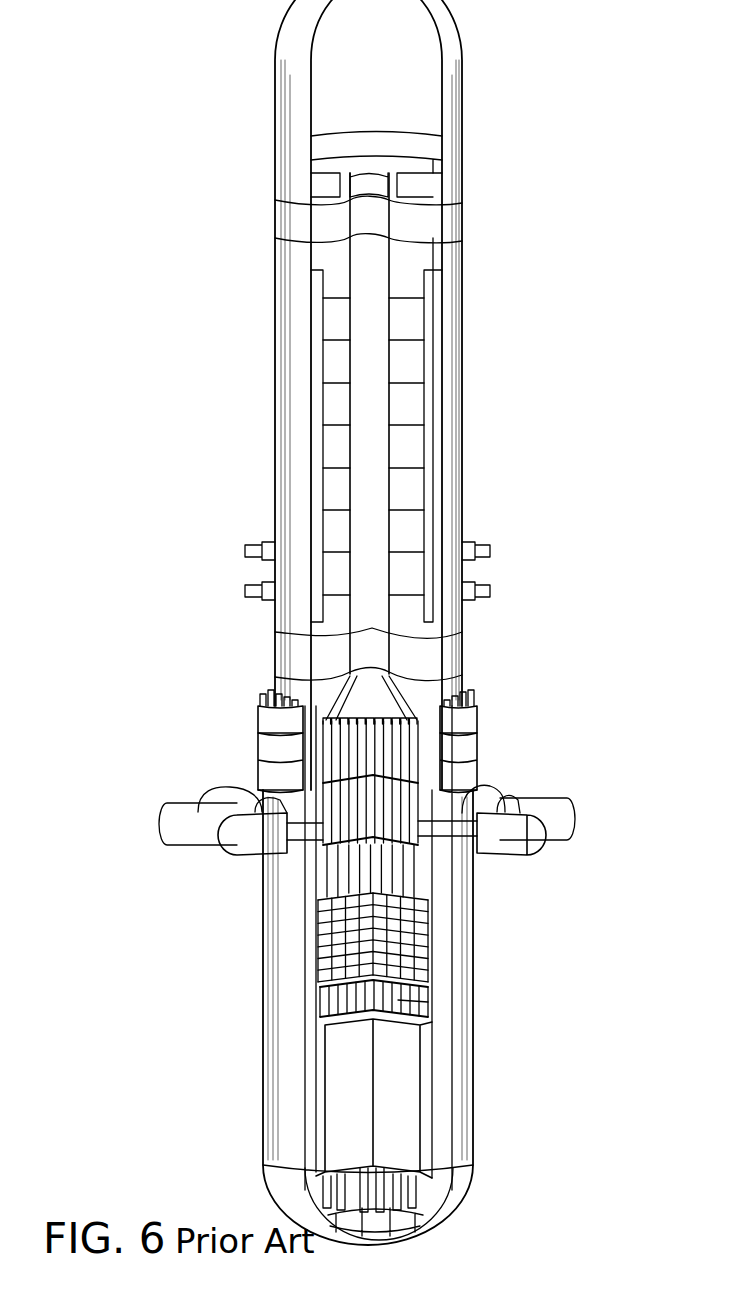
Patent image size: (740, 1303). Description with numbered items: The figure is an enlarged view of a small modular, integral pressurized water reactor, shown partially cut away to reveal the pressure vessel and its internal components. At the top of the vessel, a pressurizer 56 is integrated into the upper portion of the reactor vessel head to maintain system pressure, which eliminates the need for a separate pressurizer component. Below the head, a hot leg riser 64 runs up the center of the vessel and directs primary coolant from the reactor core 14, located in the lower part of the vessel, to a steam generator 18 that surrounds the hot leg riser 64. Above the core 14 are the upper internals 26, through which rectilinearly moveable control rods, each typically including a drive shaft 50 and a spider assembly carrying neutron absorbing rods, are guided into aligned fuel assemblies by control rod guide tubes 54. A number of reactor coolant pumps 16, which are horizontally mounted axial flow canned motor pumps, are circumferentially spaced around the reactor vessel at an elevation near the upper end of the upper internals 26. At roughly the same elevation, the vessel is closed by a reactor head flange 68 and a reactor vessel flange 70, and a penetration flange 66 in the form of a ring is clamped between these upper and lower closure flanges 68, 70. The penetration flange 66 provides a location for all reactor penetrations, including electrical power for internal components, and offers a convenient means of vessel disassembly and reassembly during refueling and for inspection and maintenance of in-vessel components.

The reactor core 14 is at (410, 1090).
The reactor coolant pumps 16 is at (560, 815).
The steam generator 18 is at (400, 420).
The upper internals 26 is at (347, 948).
The drive shaft 50 is at (395, 992).
The control rod guide tubes 54 is at (400, 878).
The pressurizer 56 is at (460, 208).
The hot leg riser 64 is at (380, 492).
The penetration flange 66 is at (468, 748).
The reactor head flange 68 is at (470, 722).
The reactor vessel flange 70 is at (468, 776).